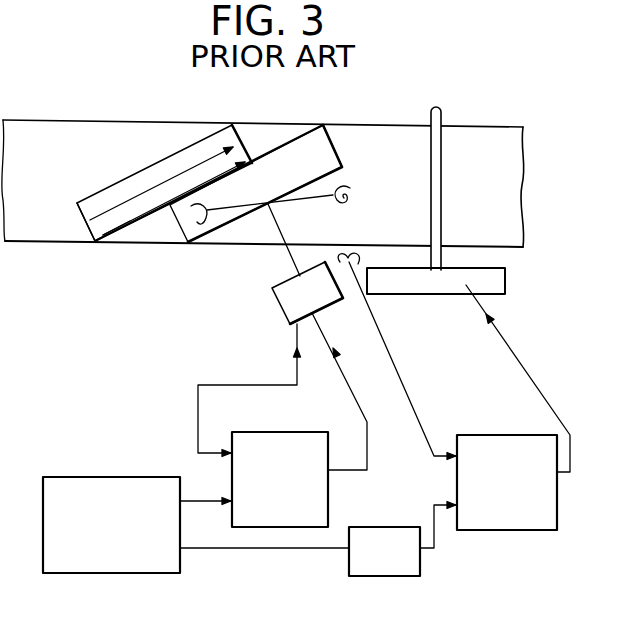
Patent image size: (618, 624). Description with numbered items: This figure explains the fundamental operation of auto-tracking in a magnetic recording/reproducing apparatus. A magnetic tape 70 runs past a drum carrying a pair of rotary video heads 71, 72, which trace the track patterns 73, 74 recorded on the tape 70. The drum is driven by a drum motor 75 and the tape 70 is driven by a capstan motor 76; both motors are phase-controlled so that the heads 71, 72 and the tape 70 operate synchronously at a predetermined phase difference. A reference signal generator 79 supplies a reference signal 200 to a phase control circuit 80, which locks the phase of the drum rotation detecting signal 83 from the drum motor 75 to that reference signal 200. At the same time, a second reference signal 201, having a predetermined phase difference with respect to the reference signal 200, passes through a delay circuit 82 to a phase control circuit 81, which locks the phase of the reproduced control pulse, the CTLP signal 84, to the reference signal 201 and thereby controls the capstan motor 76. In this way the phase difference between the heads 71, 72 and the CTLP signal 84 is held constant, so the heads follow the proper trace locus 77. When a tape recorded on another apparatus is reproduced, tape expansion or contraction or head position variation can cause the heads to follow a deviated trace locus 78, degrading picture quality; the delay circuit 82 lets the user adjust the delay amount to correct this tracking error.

The magnetic tape 70 is at (82, 130).
The video head 71 is at (345, 203).
The video head 72 is at (203, 224).
The track pattern 73 is at (202, 148).
The track pattern 74 is at (297, 157).
The drum motor 75 is at (285, 313).
The capstan motor 76 is at (433, 295).
The trace locus 77 is at (97, 216).
The trace locus 78 is at (119, 224).
The reference signal generator 79 is at (110, 573).
The phase control circuit 80 is at (328, 497).
The phase control circuit 81 is at (502, 530).
The delay circuit 82 is at (373, 577).
The drum rotation detecting signal 83 is at (198, 420).
The reproduced control pulse (CTLP signal) 84 is at (419, 420).
The reference signal 200 is at (192, 500).
The reference signal 201 is at (216, 549).